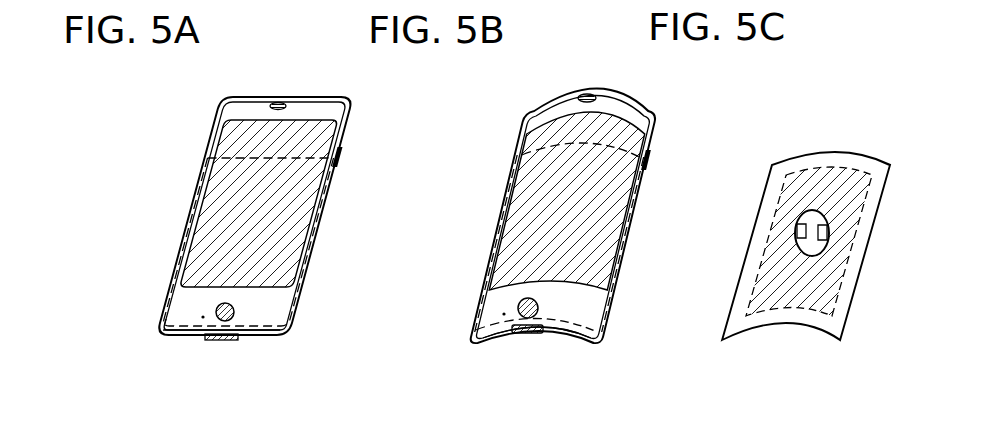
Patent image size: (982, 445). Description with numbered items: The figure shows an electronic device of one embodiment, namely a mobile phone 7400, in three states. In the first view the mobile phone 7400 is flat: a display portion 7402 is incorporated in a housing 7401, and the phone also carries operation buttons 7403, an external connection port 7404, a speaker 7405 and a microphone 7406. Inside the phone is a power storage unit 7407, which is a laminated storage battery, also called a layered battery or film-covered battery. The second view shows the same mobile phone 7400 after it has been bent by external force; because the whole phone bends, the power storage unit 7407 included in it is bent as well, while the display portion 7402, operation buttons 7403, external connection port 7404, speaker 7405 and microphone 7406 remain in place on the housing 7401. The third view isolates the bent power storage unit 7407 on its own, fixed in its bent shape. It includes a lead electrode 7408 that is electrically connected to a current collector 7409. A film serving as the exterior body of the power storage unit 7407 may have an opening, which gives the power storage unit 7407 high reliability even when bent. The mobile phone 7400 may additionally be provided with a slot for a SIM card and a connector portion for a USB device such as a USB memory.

In FIG. 5A, the mobile phone 7400 is at (207, 124).
In FIG. 5B, the mobile phone 7400 is at (509, 131).
In FIG. 5A, the housing 7401 is at (201, 317).
In FIG. 5B, the housing 7401 is at (502, 316).
In FIG. 5A, the display portion 7402 is at (285, 128).
In FIG. 5B, the display portion 7402 is at (593, 138).
In FIG. 5A, the operation buttons 7403 is at (341, 166).
In FIG. 5B, the operation buttons 7403 is at (647, 168).
In FIG. 5A, the external connection port 7404 is at (230, 342).
In FIG. 5B, the external connection port 7404 is at (531, 336).
In FIG. 5A, the speaker 7405 is at (273, 101).
In FIG. 5B, the speaker 7405 is at (578, 93).
In FIG. 5A, the microphone 7406 is at (183, 326).
In FIG. 5B, the microphone 7406 is at (497, 323).
In FIG. 5A, the power storage unit 7407 is at (287, 300).
In FIG. 5B, the power storage unit 7407 is at (595, 302).
In FIG. 5C, the power storage unit 7407 is at (757, 327).
In FIG. 5C, the lead electrode 7408 is at (785, 198).
In FIG. 5C, the current collector 7409 is at (767, 224).